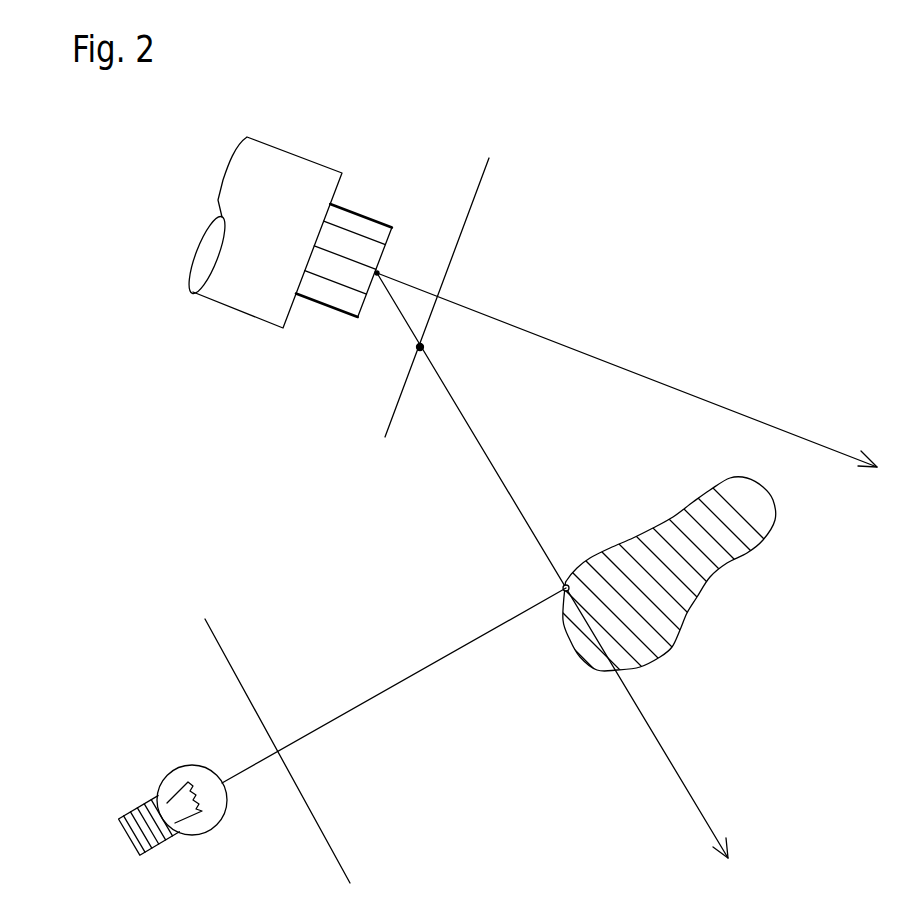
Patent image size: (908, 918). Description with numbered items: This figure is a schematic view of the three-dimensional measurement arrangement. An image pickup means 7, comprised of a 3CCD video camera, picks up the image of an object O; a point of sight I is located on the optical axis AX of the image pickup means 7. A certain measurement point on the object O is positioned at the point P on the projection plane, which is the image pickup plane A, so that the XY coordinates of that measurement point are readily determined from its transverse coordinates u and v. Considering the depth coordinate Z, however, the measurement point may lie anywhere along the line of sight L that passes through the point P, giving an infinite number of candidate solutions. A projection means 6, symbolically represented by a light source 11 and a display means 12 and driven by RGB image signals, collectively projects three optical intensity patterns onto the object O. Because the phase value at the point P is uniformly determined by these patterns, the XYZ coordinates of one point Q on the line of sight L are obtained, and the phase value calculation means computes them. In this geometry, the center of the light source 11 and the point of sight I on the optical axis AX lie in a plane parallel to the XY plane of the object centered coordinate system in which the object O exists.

The image pickup means 7 is at (298, 172).
The point of sight I is at (377, 273).
The optical axis AX is at (825, 442).
The image pickup plane A is at (477, 207).
The point P(u, v) P is at (420, 347).
The line of sight L is at (678, 773).
The object O is at (757, 528).
The point Q is at (566, 588).
The projection means 6 is at (343, 735).
The light source 11 is at (182, 775).
The display means 12 is at (330, 845).